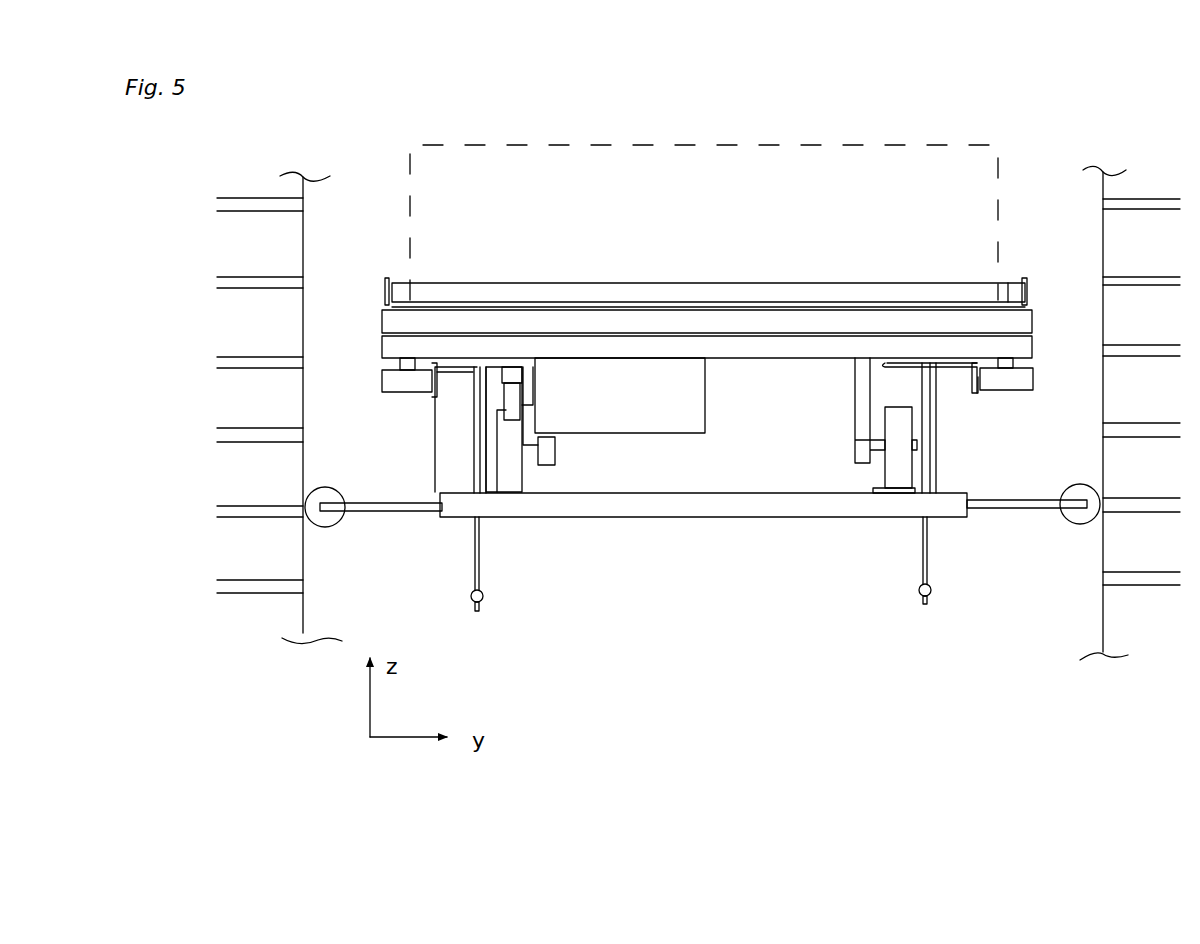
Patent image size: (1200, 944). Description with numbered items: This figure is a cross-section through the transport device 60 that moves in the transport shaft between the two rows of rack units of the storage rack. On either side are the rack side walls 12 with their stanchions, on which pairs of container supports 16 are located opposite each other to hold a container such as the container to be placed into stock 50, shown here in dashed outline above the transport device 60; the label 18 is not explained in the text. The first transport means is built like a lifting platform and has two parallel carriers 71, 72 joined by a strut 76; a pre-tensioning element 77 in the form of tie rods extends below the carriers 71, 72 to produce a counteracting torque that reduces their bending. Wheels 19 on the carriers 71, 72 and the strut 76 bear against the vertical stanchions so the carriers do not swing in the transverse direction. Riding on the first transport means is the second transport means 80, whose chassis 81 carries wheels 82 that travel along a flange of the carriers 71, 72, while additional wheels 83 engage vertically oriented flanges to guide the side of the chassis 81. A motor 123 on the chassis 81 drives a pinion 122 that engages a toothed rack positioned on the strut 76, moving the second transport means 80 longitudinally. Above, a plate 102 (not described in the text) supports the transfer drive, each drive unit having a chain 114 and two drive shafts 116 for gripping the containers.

The side wall 12 is at (258, 340).
The container support 16 is at (222, 212).
The vertical frame post 18 is at (306, 232).
The wheel 19 is at (332, 527).
The container to be placed into stock 50 is at (704, 158).
The transport device 60 is at (515, 378).
The carrier 71 is at (455, 433).
The carrier 72 is at (945, 433).
The strut 76 is at (571, 520).
The pre-tensioning element 77 is at (492, 598).
The second transport means 80 is at (820, 368).
The chassis 81 is at (748, 350).
The wheel 82 is at (512, 482).
The wheel 83 is at (388, 400).
The intermediate plate 102 is at (1038, 313).
The chain 114 is at (1010, 290).
The drive shaft 116 is at (386, 290).
The pinion 122 is at (517, 420).
The motor 123 is at (673, 440).